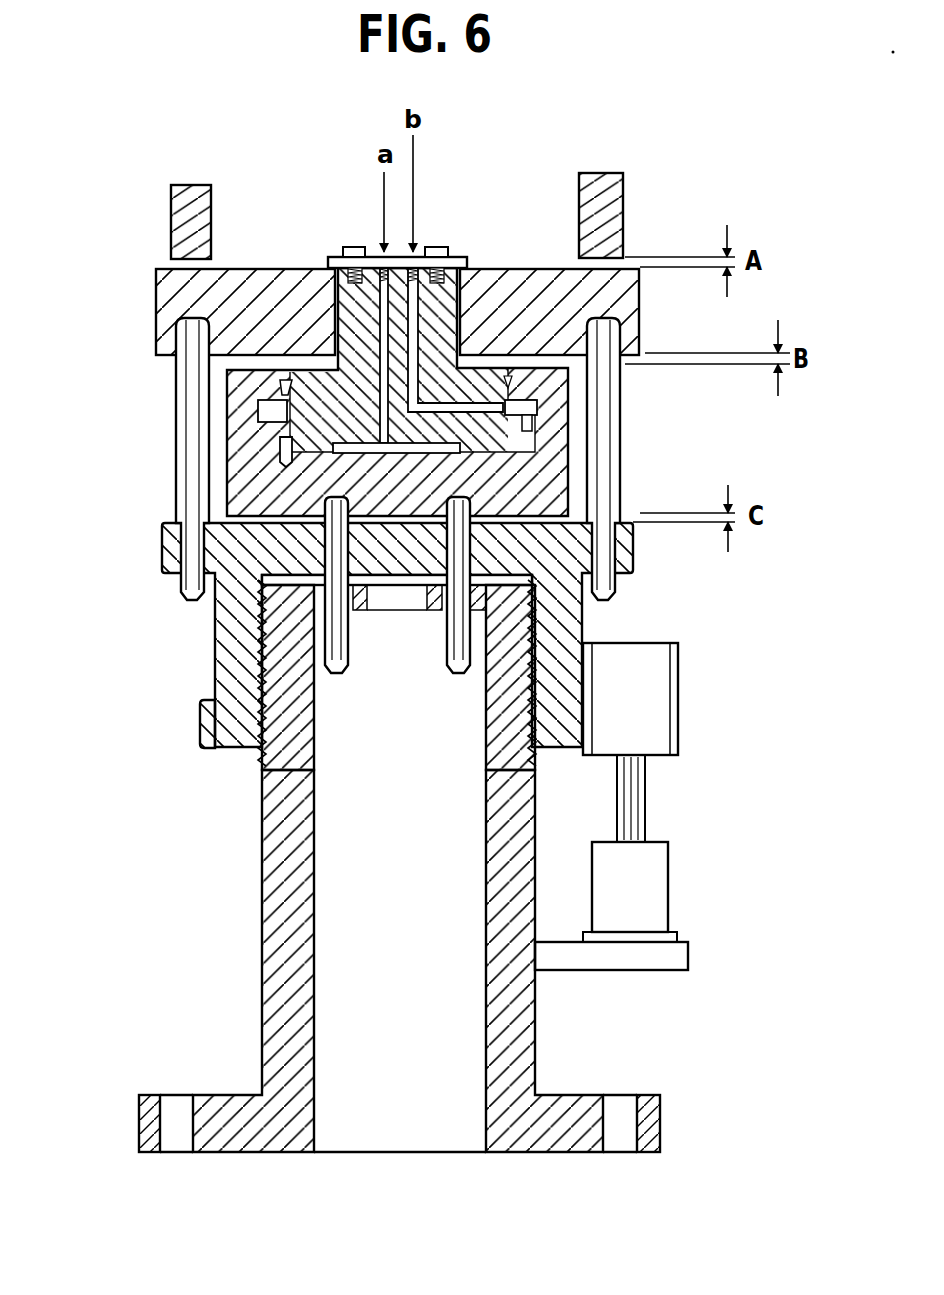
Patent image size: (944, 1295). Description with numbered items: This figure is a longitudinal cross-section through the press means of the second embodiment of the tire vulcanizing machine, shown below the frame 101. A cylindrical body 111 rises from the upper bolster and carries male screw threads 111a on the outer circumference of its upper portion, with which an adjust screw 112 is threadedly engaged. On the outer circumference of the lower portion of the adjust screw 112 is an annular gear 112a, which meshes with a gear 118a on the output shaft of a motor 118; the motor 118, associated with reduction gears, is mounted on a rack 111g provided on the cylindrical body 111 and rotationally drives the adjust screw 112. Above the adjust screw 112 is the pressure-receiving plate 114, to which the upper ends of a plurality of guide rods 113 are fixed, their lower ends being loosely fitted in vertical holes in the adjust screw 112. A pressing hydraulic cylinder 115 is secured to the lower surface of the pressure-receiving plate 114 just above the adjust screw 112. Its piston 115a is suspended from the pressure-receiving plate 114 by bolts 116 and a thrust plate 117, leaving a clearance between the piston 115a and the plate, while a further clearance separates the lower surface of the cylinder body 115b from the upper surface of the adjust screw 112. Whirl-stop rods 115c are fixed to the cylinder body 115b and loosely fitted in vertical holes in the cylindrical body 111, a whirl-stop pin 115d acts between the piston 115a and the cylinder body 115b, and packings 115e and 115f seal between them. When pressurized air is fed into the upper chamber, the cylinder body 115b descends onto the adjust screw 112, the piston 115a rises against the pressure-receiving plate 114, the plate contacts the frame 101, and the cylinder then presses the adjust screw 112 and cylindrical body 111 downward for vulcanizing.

The frame 101 is at (612, 187).
The pressure-receiving plate 114 is at (625, 295).
The pressing hydraulic cylinder 115 is at (305, 352).
The piston 115a is at (443, 297).
The cylinder body 115b is at (553, 422).
The whirl-stop rods 115c is at (452, 647).
The whirl-stop pin 115d is at (278, 456).
The packing 115e is at (283, 386).
The packing 115f is at (262, 433).
The bolts 116 is at (447, 248).
The thrust plate 117 is at (335, 257).
The guide rods 113 is at (178, 470).
The adjust screw 112 is at (640, 556).
The annular gear 112a is at (200, 730).
The cylindrical body 111 is at (488, 930).
The male screw threads 111a is at (287, 710).
The rack 111g is at (688, 958).
The motor 118 is at (662, 900).
The gear 118a is at (678, 727).